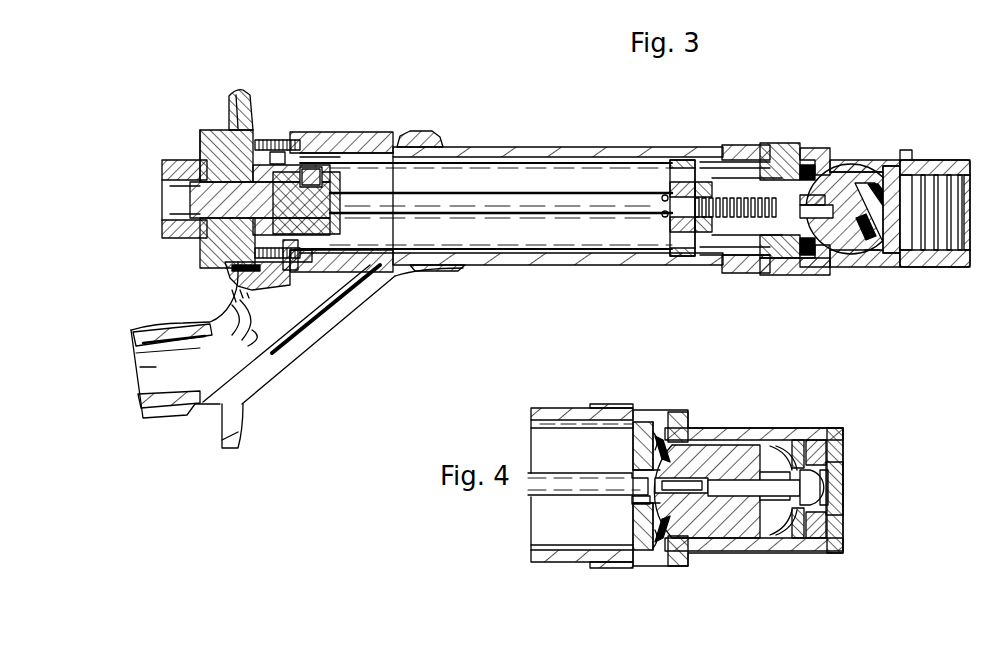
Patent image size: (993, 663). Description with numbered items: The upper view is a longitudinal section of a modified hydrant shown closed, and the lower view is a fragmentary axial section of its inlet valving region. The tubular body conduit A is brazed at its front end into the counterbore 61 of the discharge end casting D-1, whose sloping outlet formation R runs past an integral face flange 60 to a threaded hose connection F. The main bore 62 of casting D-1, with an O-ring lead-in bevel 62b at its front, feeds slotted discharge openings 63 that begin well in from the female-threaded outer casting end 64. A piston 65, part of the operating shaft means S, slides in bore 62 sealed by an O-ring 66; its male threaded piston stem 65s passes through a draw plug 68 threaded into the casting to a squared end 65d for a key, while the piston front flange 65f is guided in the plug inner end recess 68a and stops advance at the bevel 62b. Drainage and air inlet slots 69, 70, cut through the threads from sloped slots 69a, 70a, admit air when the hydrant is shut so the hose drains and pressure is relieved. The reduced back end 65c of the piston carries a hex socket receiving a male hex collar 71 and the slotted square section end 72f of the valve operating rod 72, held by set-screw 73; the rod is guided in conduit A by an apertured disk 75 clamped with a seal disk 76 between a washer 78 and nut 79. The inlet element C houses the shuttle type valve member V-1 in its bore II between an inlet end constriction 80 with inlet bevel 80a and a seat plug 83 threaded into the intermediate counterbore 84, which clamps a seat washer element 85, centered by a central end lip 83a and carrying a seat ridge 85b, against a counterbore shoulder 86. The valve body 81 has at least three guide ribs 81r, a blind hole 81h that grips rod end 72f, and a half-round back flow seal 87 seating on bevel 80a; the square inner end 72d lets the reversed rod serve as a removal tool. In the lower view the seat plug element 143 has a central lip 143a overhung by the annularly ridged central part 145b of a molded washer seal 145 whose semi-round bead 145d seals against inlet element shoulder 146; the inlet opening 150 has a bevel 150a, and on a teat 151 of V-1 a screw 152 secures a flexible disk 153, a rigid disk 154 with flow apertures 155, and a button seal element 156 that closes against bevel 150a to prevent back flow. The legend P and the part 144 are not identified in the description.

In FIG. 3, the integral face flange 60 is at (244, 420).
In FIG. 3, the counterbore 61 is at (405, 148).
In FIG. 3, the main bore 62 is at (378, 133).
In FIG. 3, the O-ring lead-in bevel 62b is at (282, 156).
In FIG. 3, the slotted bore discharge opening 63 is at (366, 253).
In FIG. 3, the female-threaded outer casting end 64 is at (226, 156).
In FIG. 3, the piston 65 is at (205, 240).
In FIG. 3, the reduced back end of piston 65c is at (300, 250).
In FIG. 3, the squared end of piston stem 65d is at (168, 197).
In FIG. 3, the piston front flange 65f is at (268, 282).
In FIG. 3, the male threaded piston stem 65s is at (165, 172).
In FIG. 3, the O-ring 66 is at (290, 268).
In FIG. 3, the draw plug 68 is at (200, 140).
In FIG. 3, the plug inner end recess 68a is at (270, 142).
In FIG. 3, the drainage and air inlet slot 69 is at (248, 272).
In FIG. 3, the sloped slot 69a is at (230, 268).
In FIG. 3, the drainage and air inlet slot 70 is at (250, 114).
In FIG. 3, the sloped slot 70a is at (232, 120).
In FIG. 3, the male hex collar 71 is at (322, 181).
In FIG. 3, the valve operating rod 72 is at (576, 194).
In FIG. 4, the valve operating rod 72 is at (561, 473).
In FIG. 3, the inner end of rod 72d is at (776, 196).
In FIG. 3, the slotted square section rod end 72f is at (260, 200).
In FIG. 3, the set-screw 73 is at (312, 152).
In FIG. 3, the disk 75 is at (676, 160).
In FIG. 3, the seal disk 76 is at (666, 222).
In FIG. 3, the washer 78 is at (666, 196).
In FIG. 3, the nut 79 is at (703, 234).
In FIG. 3, the inlet end constriction 80 is at (932, 160).
In FIG. 4, the inlet end constriction 80 is at (845, 528).
In FIG. 3, the inlet bevel 80a is at (912, 156).
In FIG. 3, the body of valve element 81 is at (838, 256).
In FIG. 3, the coaxial blind hole 81h is at (815, 218).
In FIG. 4, the coaxial blind hole 81h is at (640, 500).
In FIG. 3, the guide ribs 81r is at (862, 256).
In FIG. 3, the seat plug 83 is at (748, 145).
In FIG. 3, the central end lip 83a is at (772, 228).
In FIG. 3, the intermediate counterbore 84 is at (778, 143).
In FIG. 3, the seat washer element 85 is at (803, 164).
In FIG. 3, the seat ridge 85b is at (800, 275).
In FIG. 3, the counterbore shoulder 86 is at (820, 150).
In FIG. 3, the back flow seal 87 is at (894, 166).
In FIG. 4, the seat plug element 143 is at (655, 420).
In FIG. 4, the central lip or axial flange 143a is at (640, 462).
In FIG. 4, the lower coupling body 144 is at (640, 548).
In FIG. 4, the molded washer seal 145 is at (650, 442).
In FIG. 4, the annularly ridged central part 145b is at (688, 412).
In FIG. 4, the semi-round section bead 145d is at (668, 566).
In FIG. 4, the inlet element shoulder 146 is at (660, 440).
In FIG. 4, the inlet opening 150 is at (845, 492).
In FIG. 4, the bevel 150a is at (845, 482).
In FIG. 4, the coaxial teat or projection 151 is at (760, 551).
In FIG. 4, the screw 152 is at (827, 452).
In FIG. 4, the flexible elastomeric disk 153 is at (780, 447).
In FIG. 4, the rigid disk 154 is at (798, 440).
In FIG. 4, the flow apertures 155 is at (838, 553).
In FIG. 4, the elastomeric seal element 156 is at (845, 445).
In FIG. 3, the tubular body conduit A is at (545, 148).
In FIG. 4, the tubular body conduit A is at (558, 408).
In FIG. 3, the inlet element C is at (735, 143).
In FIG. 4, the inlet element C is at (600, 404).
In FIG. 3, the discharge end casting D-1 is at (425, 132).
In FIG. 3, the threaded hose connection F is at (196, 408).
In FIG. 3, the bore II is at (893, 238).
In FIG. 4, the bore II is at (720, 440).
In FIG. 3, the pump P is at (158, 160).
In FIG. 3, the sloping outlet formation R is at (303, 346).
In FIG. 3, the operating shaft means S is at (492, 190).
In FIG. 3, the shuttle type valve member V-1 is at (862, 170).
In FIG. 4, the shuttle type valve member V-1 is at (735, 445).